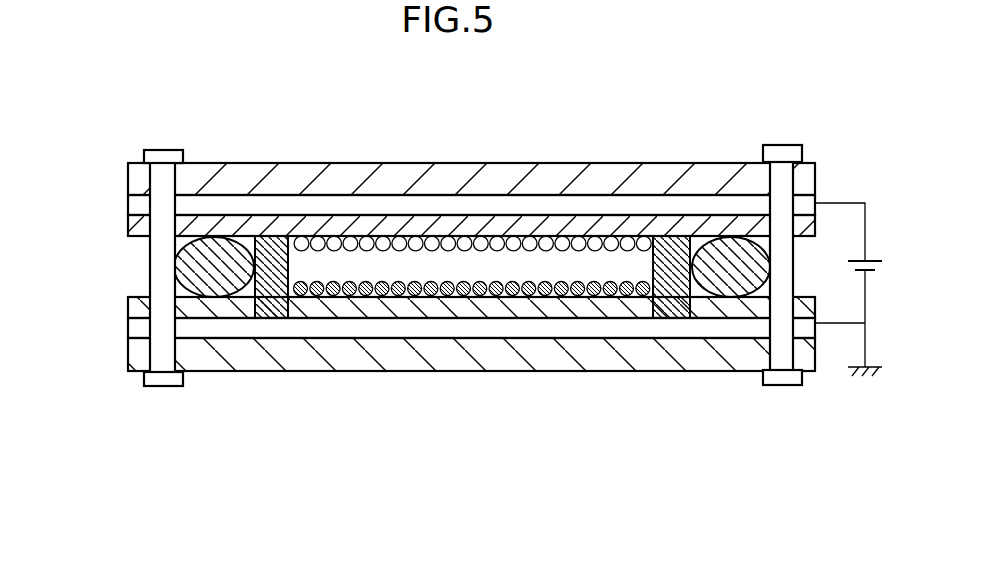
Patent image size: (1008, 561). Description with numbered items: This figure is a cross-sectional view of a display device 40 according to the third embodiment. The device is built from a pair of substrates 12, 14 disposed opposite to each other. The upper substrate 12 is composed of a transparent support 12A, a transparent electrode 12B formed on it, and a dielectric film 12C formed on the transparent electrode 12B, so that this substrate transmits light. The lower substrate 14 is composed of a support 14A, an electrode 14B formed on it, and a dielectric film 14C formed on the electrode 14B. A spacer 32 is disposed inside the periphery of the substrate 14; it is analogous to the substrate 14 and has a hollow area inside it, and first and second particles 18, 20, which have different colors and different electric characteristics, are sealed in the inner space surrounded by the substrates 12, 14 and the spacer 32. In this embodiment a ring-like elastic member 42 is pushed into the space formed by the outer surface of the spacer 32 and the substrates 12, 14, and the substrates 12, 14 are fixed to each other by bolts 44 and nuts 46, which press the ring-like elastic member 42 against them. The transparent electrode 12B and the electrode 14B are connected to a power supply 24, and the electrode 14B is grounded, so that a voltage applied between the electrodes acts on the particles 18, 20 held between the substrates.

The display device 40 is at (474, 135).
The substrate 12 is at (74, 167).
The transparent support 12A is at (131, 180).
The transparent electrode 12B is at (131, 205).
The dielectric film 12C is at (131, 229).
The substrate 14 is at (74, 296).
The support 14A is at (131, 358).
The electrode 14B is at (131, 334).
The dielectric film 14C is at (131, 311).
The first particles 18 is at (351, 240).
The second particles 20 is at (349, 297).
The spacer 32 is at (248, 263).
The ring-like elastic member 42 is at (722, 240).
The bolt 44 is at (782, 145).
The nut 46 is at (800, 374).
The power supply 24 is at (850, 273).